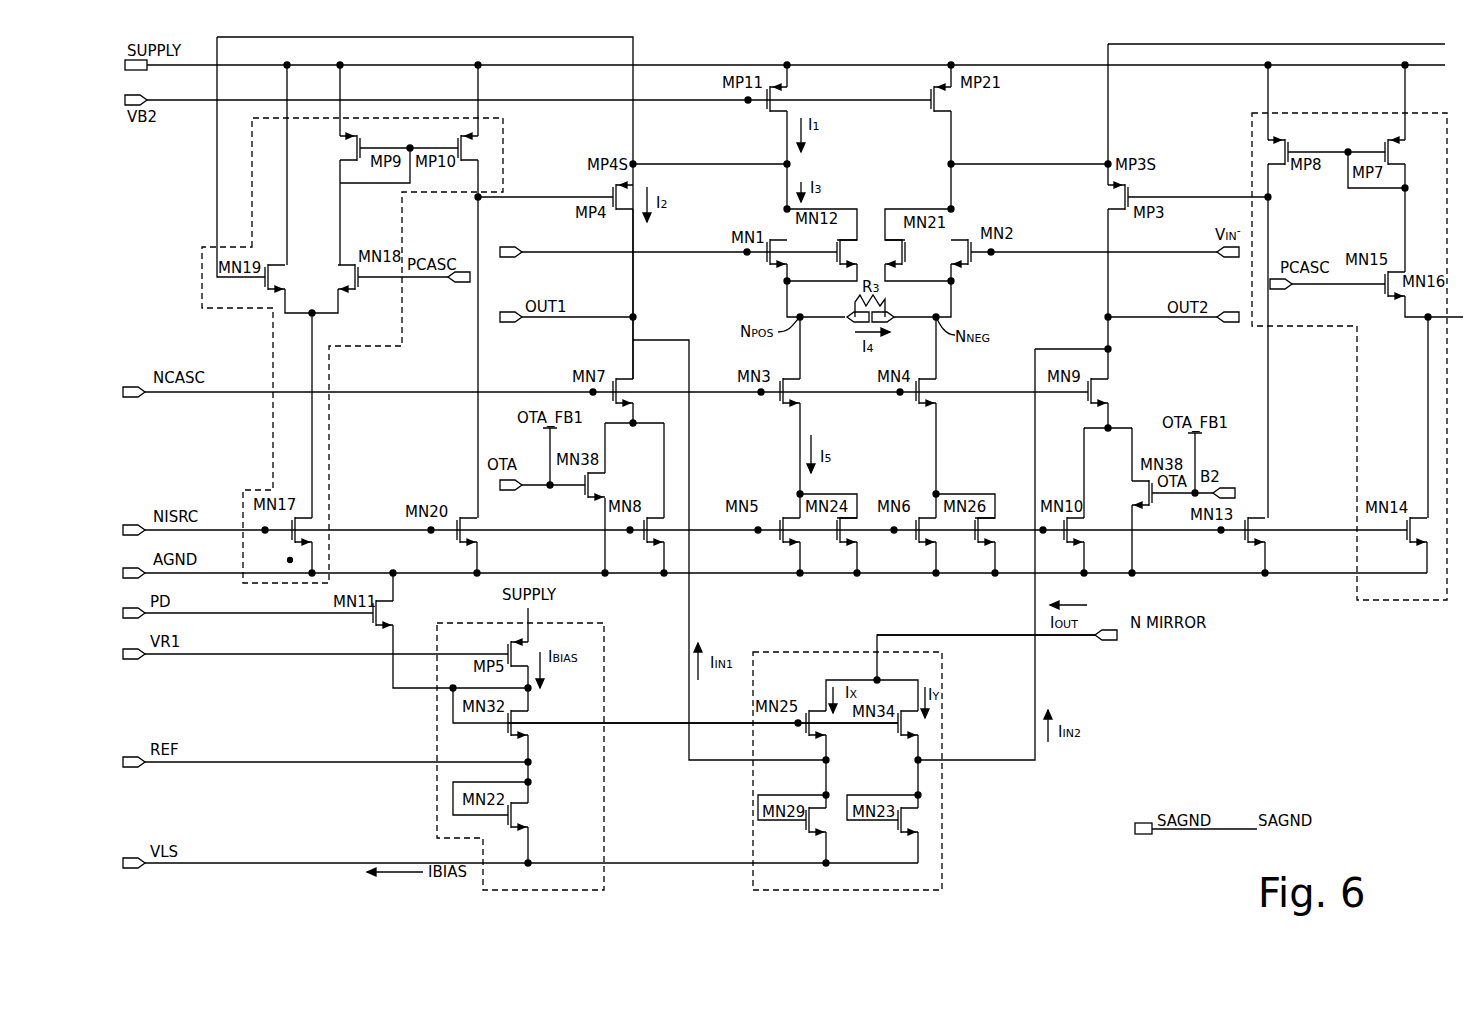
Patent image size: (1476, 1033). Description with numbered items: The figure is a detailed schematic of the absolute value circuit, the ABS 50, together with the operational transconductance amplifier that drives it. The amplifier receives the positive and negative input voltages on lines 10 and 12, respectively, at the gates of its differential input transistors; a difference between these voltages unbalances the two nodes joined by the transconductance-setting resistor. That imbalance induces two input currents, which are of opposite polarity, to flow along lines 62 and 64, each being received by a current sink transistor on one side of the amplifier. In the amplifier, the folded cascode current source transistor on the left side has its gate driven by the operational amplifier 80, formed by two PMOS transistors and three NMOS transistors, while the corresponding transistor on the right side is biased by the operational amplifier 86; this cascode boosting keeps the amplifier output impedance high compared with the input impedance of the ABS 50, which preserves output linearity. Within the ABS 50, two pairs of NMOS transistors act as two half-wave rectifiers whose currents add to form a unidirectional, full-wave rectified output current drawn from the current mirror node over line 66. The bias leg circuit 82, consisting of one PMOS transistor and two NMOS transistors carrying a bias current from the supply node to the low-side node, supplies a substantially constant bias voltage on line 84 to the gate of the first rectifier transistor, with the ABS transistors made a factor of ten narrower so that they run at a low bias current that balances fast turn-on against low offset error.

The operational amplifier 80 is at (202, 292).
The line 10 is at (578, 253).
The line 12 is at (1120, 253).
The line 62 is at (689, 604).
The line 64 is at (1035, 660).
The line 66 is at (977, 635).
The bias leg circuit 82 is at (604, 655).
The line 84 is at (627, 723).
The operational amplifier 86 is at (1297, 326).
The ABS 50 is at (942, 807).